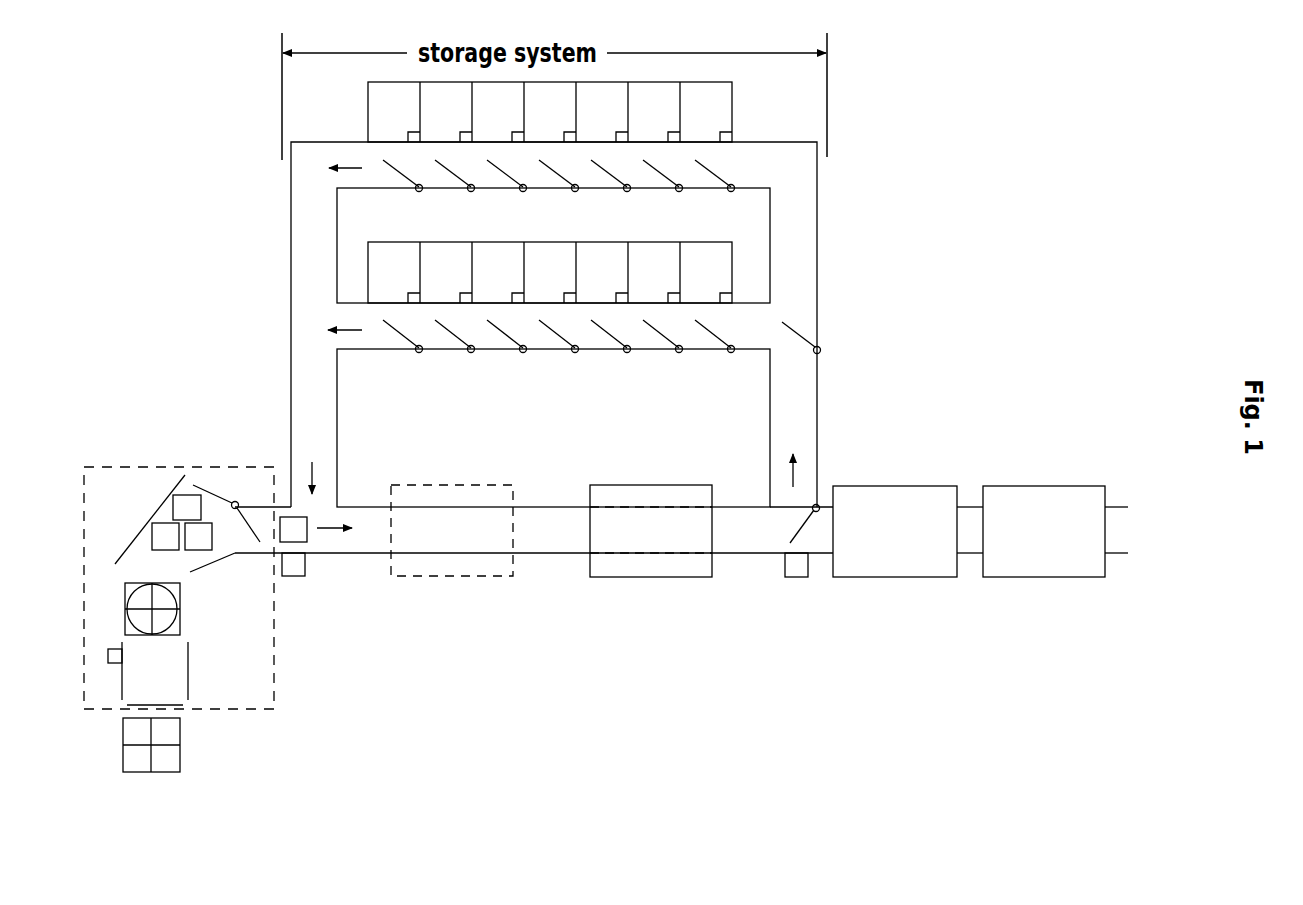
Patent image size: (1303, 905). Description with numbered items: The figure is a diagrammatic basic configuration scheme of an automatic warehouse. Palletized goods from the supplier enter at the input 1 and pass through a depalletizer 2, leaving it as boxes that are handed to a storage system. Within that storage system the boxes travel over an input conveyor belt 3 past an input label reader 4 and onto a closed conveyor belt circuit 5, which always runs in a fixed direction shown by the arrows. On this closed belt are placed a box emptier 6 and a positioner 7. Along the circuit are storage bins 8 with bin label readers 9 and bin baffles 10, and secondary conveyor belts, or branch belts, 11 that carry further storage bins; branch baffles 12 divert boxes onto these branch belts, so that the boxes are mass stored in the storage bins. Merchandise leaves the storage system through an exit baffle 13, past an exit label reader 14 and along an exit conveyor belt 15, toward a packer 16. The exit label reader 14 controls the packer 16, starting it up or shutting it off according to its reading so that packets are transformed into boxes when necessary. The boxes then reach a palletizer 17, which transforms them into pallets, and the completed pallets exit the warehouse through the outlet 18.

The input 1 is at (166, 745).
The depalletizer 2 is at (179, 588).
The input conveyor belt 3 is at (284, 505).
The input label reader 4 is at (298, 584).
The closed conveyor belt circuit 5 is at (538, 410).
The box emptier 6 is at (452, 497).
The positioner 7 is at (649, 495).
The storage bins 8 is at (550, 192).
The bin label readers 9 is at (727, 296).
The bin baffles 10 is at (559, 354).
The secondary conveyor belts (branch belts) 11 is at (492, 203).
The branch baffles 12 is at (818, 342).
The exit baffle 13 is at (805, 533).
The exit label reader 14 is at (789, 580).
The exit conveyor belt 15 is at (824, 525).
The packer 16 is at (895, 531).
The palletizer 17 is at (1031, 531).
The outlet 18 is at (1127, 530).